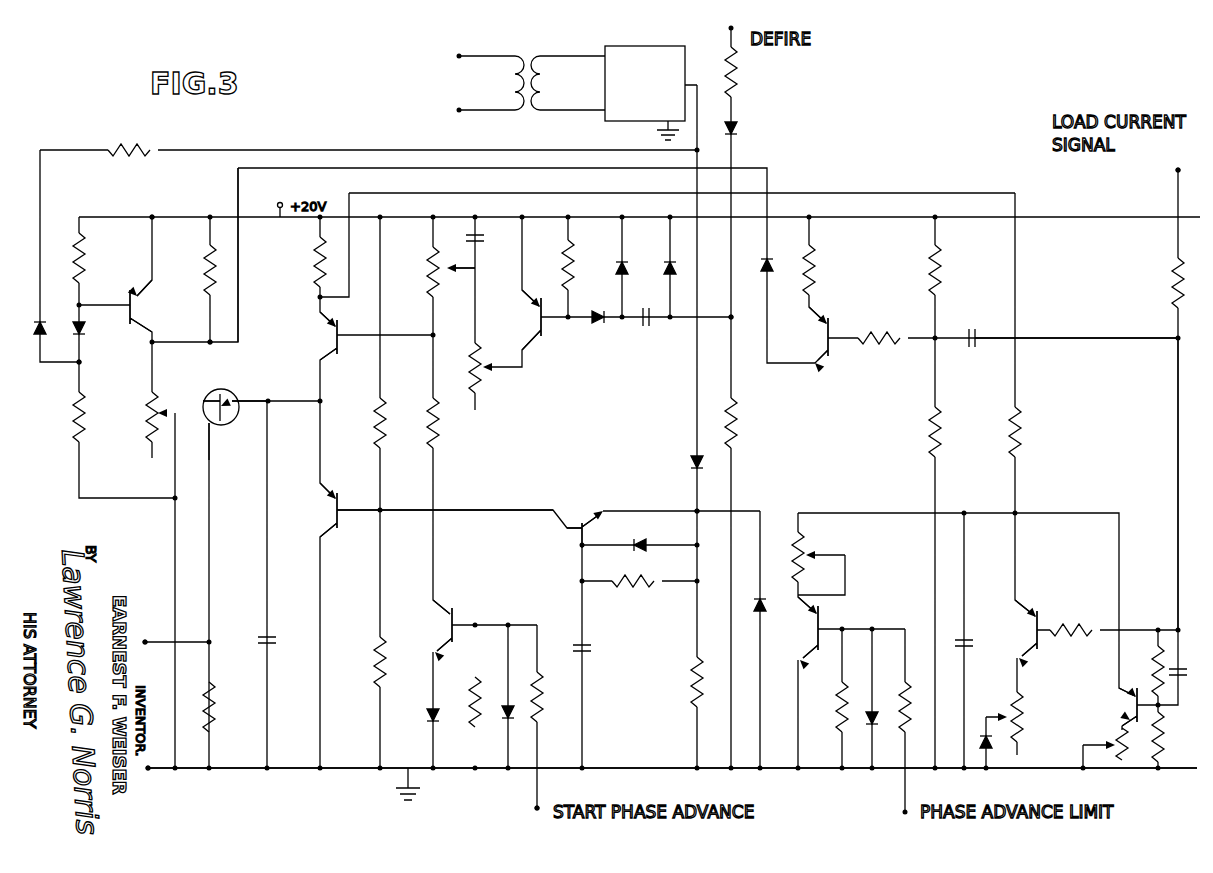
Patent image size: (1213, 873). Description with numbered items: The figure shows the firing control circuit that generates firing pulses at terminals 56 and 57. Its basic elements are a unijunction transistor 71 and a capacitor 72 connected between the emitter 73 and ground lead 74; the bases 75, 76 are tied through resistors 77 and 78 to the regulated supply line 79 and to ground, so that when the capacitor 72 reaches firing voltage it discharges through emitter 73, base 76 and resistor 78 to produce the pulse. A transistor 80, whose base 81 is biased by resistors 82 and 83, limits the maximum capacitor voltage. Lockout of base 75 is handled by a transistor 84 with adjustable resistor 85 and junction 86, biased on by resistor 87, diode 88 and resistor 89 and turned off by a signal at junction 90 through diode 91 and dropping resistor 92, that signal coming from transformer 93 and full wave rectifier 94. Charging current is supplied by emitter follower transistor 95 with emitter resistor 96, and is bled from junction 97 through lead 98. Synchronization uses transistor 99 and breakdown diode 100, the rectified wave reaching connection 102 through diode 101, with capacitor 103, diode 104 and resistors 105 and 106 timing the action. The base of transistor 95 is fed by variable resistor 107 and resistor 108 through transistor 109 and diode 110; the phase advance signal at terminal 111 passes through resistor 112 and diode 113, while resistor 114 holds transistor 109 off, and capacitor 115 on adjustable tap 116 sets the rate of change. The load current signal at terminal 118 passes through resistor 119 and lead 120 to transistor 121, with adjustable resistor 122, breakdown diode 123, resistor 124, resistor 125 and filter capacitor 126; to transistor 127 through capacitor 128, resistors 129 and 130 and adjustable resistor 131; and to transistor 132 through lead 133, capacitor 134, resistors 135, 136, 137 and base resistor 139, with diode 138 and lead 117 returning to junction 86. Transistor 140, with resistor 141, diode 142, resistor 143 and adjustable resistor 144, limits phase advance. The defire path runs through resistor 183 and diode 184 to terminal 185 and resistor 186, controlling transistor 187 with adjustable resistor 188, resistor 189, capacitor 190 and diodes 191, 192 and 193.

The terminal 56 is at (149, 765).
The terminal 57 is at (147, 640).
The unijunction transistor 71 is at (238, 395).
The capacitor 72 is at (258, 638).
The emitter 73 is at (246, 405).
The ground lead 74 is at (222, 770).
The base 75 is at (214, 395).
The base 76 is at (212, 428).
The resistor 77 is at (205, 275).
The resistor 78 is at (216, 700).
The regulated D.-C. supply line 79 is at (180, 217).
The transistor 80 is at (342, 504).
The base 81 is at (358, 515).
The resistor 82 is at (372, 425).
The resistor 83 is at (372, 664).
The transistor 84 is at (130, 320).
The adjustable resistor 85 is at (158, 400).
The junction 86 is at (213, 345).
The base to emitter resistor 87 is at (87, 250).
The diode 88 is at (85, 333).
The resistor 89 is at (88, 418).
The junction 90 is at (84, 365).
The diode 91 is at (35, 326).
The dropping resistor 92 is at (142, 142).
The transformer 93 is at (530, 47).
The full wave rectifier 94 is at (624, 46).
The transistor 95 is at (342, 326).
The emitter resistor 96 is at (314, 262).
The junction 97 is at (318, 298).
The lead 98 is at (440, 196).
The transistor 99 is at (574, 532).
The breakdown diode 100 is at (766, 612).
The diode 101 is at (688, 462).
The connection 102 is at (694, 510).
The capacitor 103 is at (592, 647).
The diode 104 is at (644, 538).
The resistor 105 is at (690, 688).
The resistor 106 is at (652, 588).
The variable resistor 107 is at (425, 268).
The resistor 108 is at (420, 408).
The transistor 109 is at (457, 618).
The diode 110 is at (426, 718).
The terminal 111 is at (533, 810).
The current limiting resistor 112 is at (544, 718).
The diode 113 is at (502, 728).
The resistor 114 is at (468, 728).
The capacitor 115 is at (486, 244).
The adjustable tap 116 is at (460, 276).
The lead 117 is at (240, 238).
The terminal 118 is at (1172, 174).
The resistor 119 is at (1170, 280).
The lead 120 is at (1176, 428).
The transistor 121 is at (1041, 614).
The adjustable resistor 122 is at (1026, 706).
The breakdown diode 123 is at (978, 722).
The resistor 124 is at (1072, 640).
The resistor 125 is at (1008, 430).
The capacitor 126 is at (970, 642).
The transistor 127 is at (1133, 702).
The capacitor 128 is at (1182, 690).
The resistor 129 is at (1152, 640).
The resistor 130 is at (1163, 742).
The adjustable resistor 131 is at (1112, 736).
The transistor 132 is at (836, 360).
The lead 133 is at (1046, 336).
The capacitor 134 is at (972, 330).
The resistor 135 is at (942, 258).
The resistor 136 is at (928, 430).
The resistor 137 is at (818, 270).
The diode 138 is at (771, 260).
The base resistor 139 is at (884, 332).
The transistor 140 is at (823, 615).
The resistor 141 is at (834, 712).
The diode 142 is at (866, 705).
The resistor 143 is at (898, 700).
The adjustable resistor 144 is at (812, 552).
The resistor 183 is at (738, 80).
The diode 184 is at (738, 128).
The terminal 185 is at (734, 314).
The voltage dividing resistor 186 is at (738, 418).
The transistor 187 is at (545, 336).
The adjustable resistor 188 is at (485, 383).
The resistor 189 is at (548, 258).
The capacitor 190 is at (647, 327).
The diode 191 is at (597, 325).
The diode 192 is at (664, 262).
The diode 193 is at (615, 262).